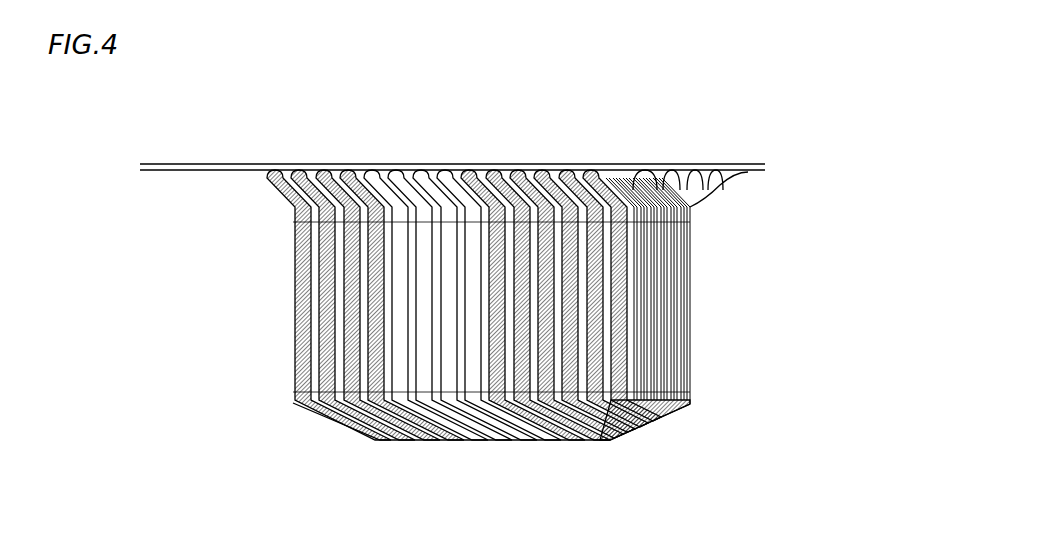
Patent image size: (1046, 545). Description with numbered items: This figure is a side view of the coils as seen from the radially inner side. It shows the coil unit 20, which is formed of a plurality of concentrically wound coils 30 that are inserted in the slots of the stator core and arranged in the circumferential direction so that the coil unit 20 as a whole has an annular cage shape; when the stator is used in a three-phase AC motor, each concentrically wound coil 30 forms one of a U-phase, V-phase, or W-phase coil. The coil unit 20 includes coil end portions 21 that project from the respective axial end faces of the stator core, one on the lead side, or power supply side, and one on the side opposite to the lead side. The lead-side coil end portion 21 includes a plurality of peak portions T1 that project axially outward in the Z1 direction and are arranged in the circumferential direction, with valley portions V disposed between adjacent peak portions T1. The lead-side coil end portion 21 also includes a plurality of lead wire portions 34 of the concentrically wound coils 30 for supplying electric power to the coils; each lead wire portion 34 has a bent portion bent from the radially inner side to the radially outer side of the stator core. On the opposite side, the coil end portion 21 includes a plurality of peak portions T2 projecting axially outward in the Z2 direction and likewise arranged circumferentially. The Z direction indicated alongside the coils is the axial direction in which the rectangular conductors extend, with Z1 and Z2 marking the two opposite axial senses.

The coil unit 20 is at (148, 134).
The coil end portions 21 is at (268, 196).
The concentrically wound coil 30 is at (553, 443).
The lead wire portions 34 is at (405, 170).
The peak portions T1 is at (398, 170).
The peak portions T2 is at (488, 443).
The valley portions V is at (450, 133).
The axial direction Z is at (753, 308).
The Z1 direction Z1 is at (793, 314).
The Z2 direction Z2 is at (788, 370).